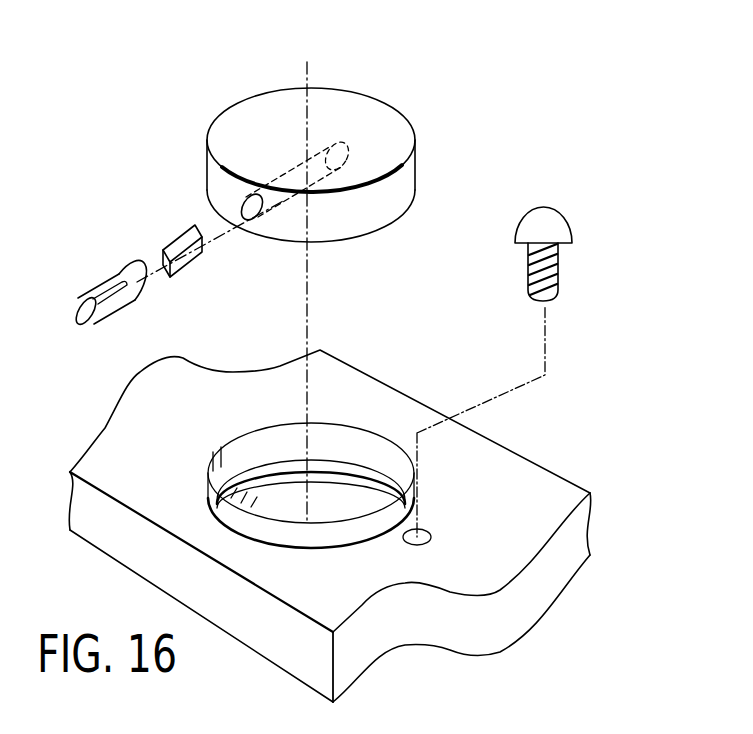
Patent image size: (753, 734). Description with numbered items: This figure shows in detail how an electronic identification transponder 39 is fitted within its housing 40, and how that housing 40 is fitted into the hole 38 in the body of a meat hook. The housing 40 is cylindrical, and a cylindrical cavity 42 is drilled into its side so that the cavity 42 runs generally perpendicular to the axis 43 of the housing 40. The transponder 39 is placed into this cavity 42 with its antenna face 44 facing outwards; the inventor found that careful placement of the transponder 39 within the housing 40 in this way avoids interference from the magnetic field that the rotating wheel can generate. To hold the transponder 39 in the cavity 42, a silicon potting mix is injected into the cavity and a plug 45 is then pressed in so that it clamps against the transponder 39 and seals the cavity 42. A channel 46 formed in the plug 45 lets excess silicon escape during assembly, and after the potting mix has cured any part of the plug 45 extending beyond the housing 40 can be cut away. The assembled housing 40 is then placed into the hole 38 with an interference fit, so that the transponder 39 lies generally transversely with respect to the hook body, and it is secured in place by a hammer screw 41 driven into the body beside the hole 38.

The hole 38 is at (361, 532).
The transponder 39 is at (193, 260).
The housing 40 is at (413, 178).
The hammer screw 41 is at (556, 232).
The cylindrical cavity 42 is at (243, 223).
The axis 43 is at (307, 84).
The antenna face 44 is at (180, 243).
The plug 45 is at (82, 297).
The channel 46 is at (128, 284).